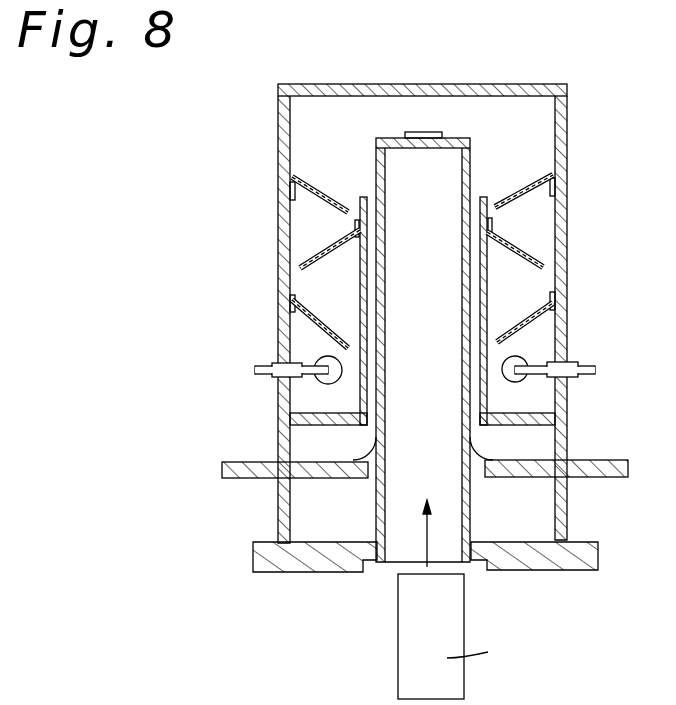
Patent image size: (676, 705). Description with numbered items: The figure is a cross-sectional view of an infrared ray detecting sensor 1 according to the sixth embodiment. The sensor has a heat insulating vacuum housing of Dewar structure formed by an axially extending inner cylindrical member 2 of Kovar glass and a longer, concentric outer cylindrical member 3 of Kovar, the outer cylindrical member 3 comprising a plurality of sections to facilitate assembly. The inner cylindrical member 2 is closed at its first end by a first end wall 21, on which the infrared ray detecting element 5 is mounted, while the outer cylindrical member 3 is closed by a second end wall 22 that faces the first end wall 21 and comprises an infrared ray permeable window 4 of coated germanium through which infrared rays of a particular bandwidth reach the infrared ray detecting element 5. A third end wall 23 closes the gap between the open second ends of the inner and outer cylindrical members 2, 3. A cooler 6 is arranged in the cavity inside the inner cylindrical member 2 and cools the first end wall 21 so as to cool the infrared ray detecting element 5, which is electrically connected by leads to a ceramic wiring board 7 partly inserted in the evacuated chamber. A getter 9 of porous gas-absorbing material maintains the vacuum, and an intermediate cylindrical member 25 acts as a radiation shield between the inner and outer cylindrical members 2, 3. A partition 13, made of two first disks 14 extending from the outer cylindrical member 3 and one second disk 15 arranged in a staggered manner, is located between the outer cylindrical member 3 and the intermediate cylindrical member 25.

The infrared ray detecting sensor 1 is at (588, 110).
The inner cylindrical member 2 is at (470, 163).
The outer cylindrical member 3 is at (567, 210).
The infrared ray permeable window 4 is at (473, 84).
The infrared ray detecting element 5 is at (422, 132).
The cooler 6 is at (398, 648).
The ceramic wiring board 7 is at (590, 464).
The getter 9 is at (515, 357).
The partition 13 is at (322, 168).
The first disk 14 is at (310, 200).
The second disk 15 is at (326, 250).
The first end wall 21 is at (393, 137).
The second end wall 22 is at (302, 84).
The third end wall 23 is at (322, 558).
The intermediate cylindrical member 25 is at (488, 297).